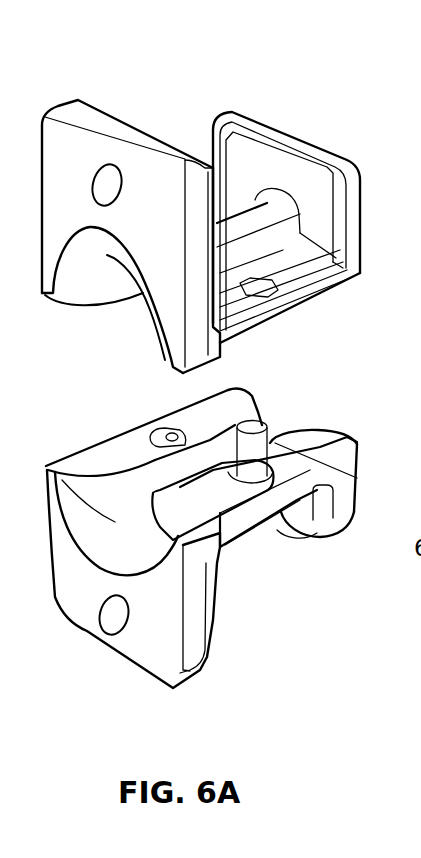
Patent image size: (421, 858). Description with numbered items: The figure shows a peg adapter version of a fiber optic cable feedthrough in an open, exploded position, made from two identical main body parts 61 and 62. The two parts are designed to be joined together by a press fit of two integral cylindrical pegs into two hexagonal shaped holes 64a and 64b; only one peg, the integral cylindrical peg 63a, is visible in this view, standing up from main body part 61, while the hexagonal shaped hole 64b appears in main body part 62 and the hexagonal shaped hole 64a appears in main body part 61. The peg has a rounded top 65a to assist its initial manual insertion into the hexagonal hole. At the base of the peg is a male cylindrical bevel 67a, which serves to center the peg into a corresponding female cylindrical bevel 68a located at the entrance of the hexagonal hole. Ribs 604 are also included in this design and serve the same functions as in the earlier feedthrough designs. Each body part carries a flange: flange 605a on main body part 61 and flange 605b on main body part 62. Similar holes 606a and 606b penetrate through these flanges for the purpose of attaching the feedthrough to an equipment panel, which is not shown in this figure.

The main body part 61 is at (246, 538).
The main body part 62 is at (277, 307).
The integral cylindrical peg 63a is at (356, 483).
The hexagonal shaped hole 64a is at (150, 432).
The hexagonal shaped hole 64b is at (277, 287).
The rounded top 65a is at (245, 424).
The male cylindrical bevel 67a is at (267, 488).
The female cylindrical bevel 68a is at (173, 427).
The ribs 604 is at (80, 470).
The flange 605a is at (215, 625).
The flange 605b is at (110, 110).
The hole 606a is at (110, 620).
The hole 606b is at (117, 172).